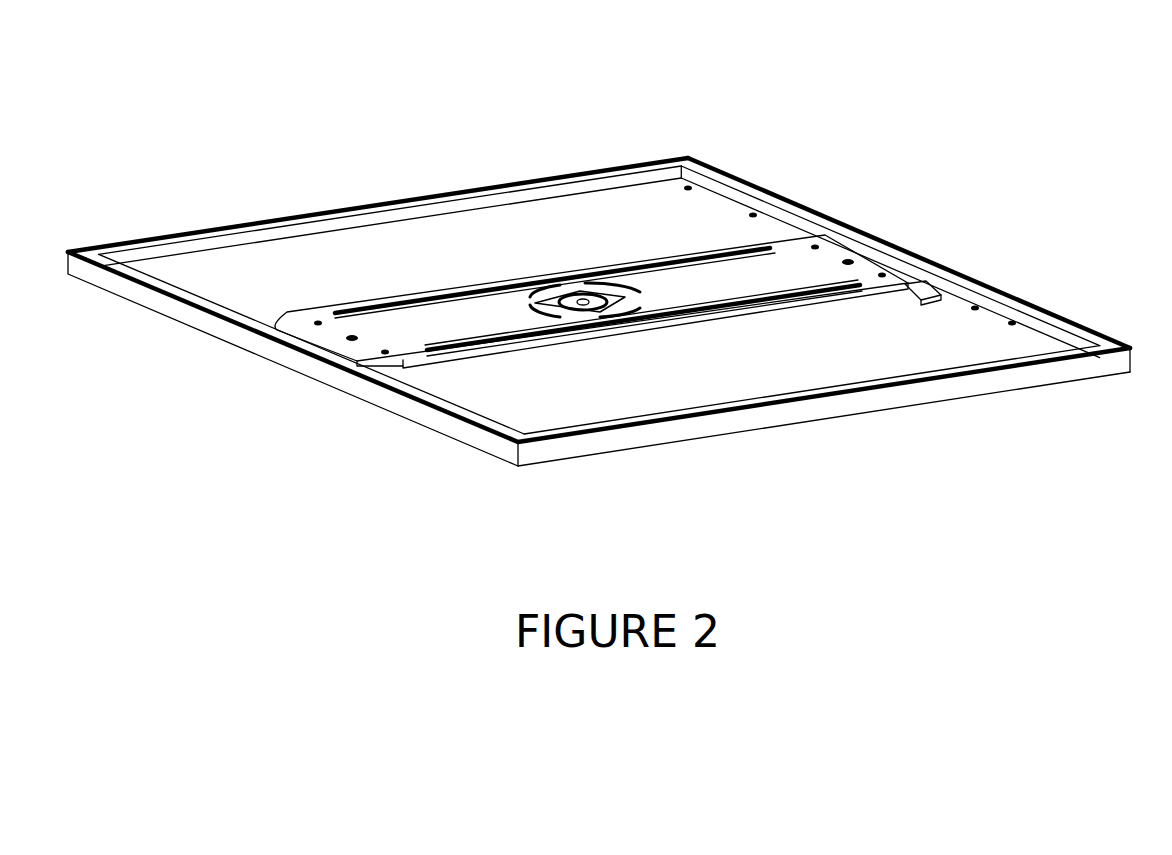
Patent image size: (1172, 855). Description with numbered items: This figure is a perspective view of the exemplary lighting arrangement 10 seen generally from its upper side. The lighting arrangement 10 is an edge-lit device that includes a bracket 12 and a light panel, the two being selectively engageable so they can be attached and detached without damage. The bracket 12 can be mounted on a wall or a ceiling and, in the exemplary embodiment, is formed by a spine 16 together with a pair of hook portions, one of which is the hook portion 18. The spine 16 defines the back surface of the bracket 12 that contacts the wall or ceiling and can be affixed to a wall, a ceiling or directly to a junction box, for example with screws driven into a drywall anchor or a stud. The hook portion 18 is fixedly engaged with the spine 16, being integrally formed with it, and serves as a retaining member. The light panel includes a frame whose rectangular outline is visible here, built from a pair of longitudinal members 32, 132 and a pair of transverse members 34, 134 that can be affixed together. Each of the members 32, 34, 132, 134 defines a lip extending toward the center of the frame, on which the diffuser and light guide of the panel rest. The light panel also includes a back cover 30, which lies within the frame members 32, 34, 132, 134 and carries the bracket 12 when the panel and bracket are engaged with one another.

The lighting arrangement 10 is at (238, 64).
The bracket 12 is at (599, 274).
The spine 16 is at (775, 258).
The hook portion 18 is at (888, 267).
The back cover 30 is at (254, 266).
The longitudinal member 32 is at (172, 238).
The transverse member 34 is at (416, 412).
The longitudinal member 132 is at (793, 408).
The transverse member 134 is at (1030, 315).